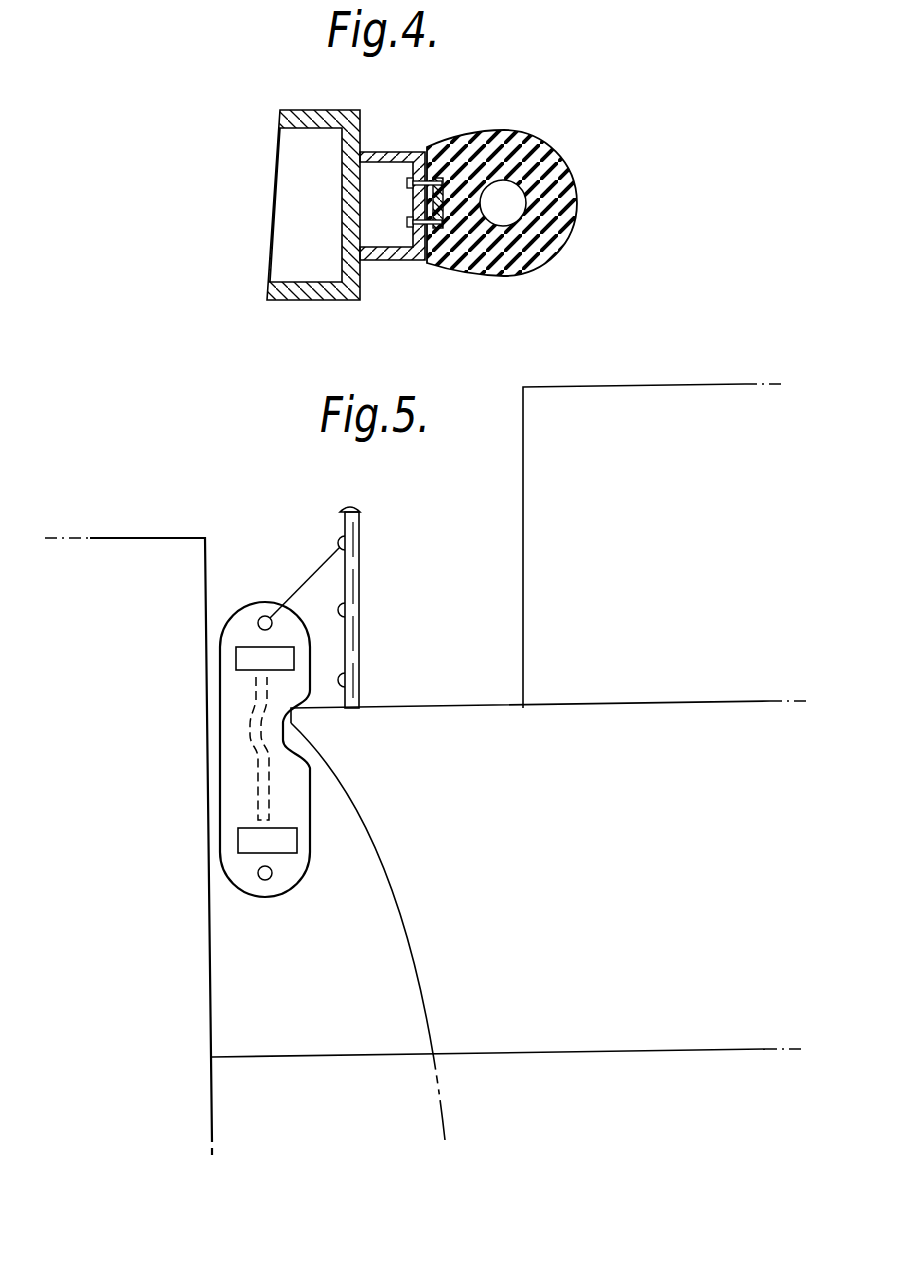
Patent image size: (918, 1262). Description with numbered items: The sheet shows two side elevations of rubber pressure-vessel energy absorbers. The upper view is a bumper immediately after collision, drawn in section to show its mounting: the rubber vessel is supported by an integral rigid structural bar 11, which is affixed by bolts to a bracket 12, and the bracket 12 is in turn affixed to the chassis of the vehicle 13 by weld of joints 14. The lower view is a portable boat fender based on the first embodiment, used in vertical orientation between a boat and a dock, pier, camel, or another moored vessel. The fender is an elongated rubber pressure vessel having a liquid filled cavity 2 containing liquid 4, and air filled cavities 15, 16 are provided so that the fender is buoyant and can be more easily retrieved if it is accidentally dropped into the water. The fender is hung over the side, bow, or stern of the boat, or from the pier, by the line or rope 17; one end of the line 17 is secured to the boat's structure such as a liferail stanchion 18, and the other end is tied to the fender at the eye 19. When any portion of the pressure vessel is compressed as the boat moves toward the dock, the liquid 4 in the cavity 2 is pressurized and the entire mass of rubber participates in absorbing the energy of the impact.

In FIG. 5, the liquid filled cavity 2 is at (250, 740).
In FIG. 5, the liquid 4 is at (262, 780).
In FIG. 4, the rigid structural bar 11 is at (446, 247).
In FIG. 4, the bracket 12 is at (420, 150).
In FIG. 4, the chassis of the vehicle 13 is at (343, 80).
In FIG. 4, the weld of joints 14 is at (367, 150).
In FIG. 5, the air filled cavity 15 is at (252, 655).
In FIG. 5, the air filled cavity 16 is at (252, 840).
In FIG. 5, the line or rope 17 is at (312, 574).
In FIG. 5, the liferail stanchion 18 is at (358, 594).
In FIG. 5, the eye 19 is at (265, 616).